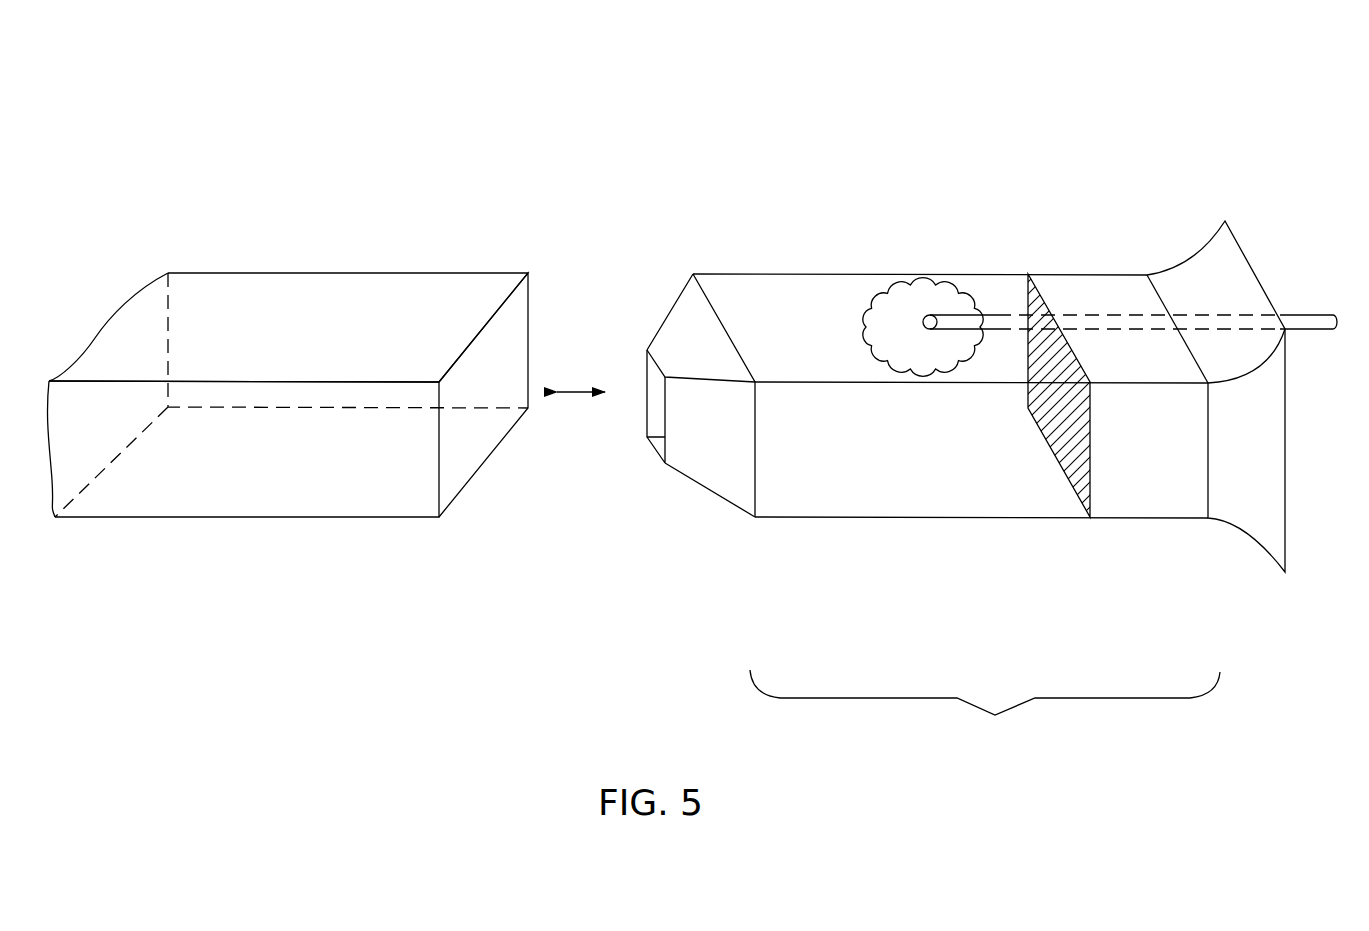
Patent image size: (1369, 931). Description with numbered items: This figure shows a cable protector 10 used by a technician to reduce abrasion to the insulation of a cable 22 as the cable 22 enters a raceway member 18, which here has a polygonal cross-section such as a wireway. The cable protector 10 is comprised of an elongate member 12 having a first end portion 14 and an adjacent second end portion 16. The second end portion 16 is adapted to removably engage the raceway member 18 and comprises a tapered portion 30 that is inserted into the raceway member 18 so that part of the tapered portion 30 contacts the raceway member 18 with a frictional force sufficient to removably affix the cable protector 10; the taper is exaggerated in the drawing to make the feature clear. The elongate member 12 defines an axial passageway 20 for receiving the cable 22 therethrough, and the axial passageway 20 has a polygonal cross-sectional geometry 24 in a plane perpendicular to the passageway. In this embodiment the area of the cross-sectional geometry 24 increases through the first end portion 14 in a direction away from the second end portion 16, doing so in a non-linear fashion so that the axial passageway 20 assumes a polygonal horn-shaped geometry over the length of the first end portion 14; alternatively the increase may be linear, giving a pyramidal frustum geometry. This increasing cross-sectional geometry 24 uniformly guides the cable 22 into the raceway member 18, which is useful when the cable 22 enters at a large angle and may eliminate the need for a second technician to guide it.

The cable protector 10 is at (887, 153).
The elongate member 12 is at (985, 710).
The first end portion 14 is at (1176, 248).
The second end portion 16 is at (763, 240).
The raceway member 18 is at (367, 245).
The axial passageway 20 is at (655, 447).
The cable 22 is at (1314, 302).
The cross-sectional geometry 24 is at (1046, 458).
The tapered portion 30 is at (734, 508).